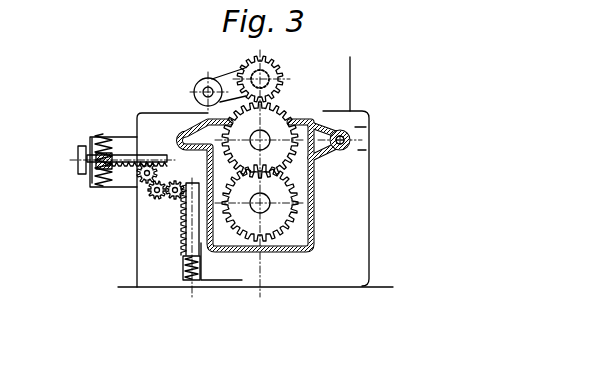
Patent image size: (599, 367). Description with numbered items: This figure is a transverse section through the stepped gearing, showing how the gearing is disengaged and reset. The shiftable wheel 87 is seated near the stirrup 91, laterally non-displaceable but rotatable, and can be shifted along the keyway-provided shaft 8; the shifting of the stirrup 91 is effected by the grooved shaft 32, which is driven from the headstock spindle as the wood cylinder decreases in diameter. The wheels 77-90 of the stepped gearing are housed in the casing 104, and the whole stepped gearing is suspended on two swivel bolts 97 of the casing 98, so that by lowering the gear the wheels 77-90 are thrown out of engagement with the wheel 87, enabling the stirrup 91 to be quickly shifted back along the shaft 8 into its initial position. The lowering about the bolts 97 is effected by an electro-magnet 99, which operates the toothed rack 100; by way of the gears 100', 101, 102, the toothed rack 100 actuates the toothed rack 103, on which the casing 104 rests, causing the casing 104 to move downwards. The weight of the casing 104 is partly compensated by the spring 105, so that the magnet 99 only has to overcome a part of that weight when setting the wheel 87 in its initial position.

The shaft 8 is at (271, 70).
The grooved shaft 32 is at (200, 90).
The wheel 87 is at (278, 105).
The stirrup 91 is at (222, 72).
The wheels of the stepped gearing 77-90 is at (350, 80).
The swivel bolts 97 is at (334, 154).
The casing 98 is at (371, 159).
The electro-magnet 99 is at (105, 136).
The toothed rack 100 is at (127, 126).
The gear 100' is at (121, 194).
The gear 101 is at (150, 196).
The gear 102 is at (168, 203).
The toothed rack 103 is at (181, 221).
The casing 104 is at (316, 218).
The spring 105 is at (180, 266).